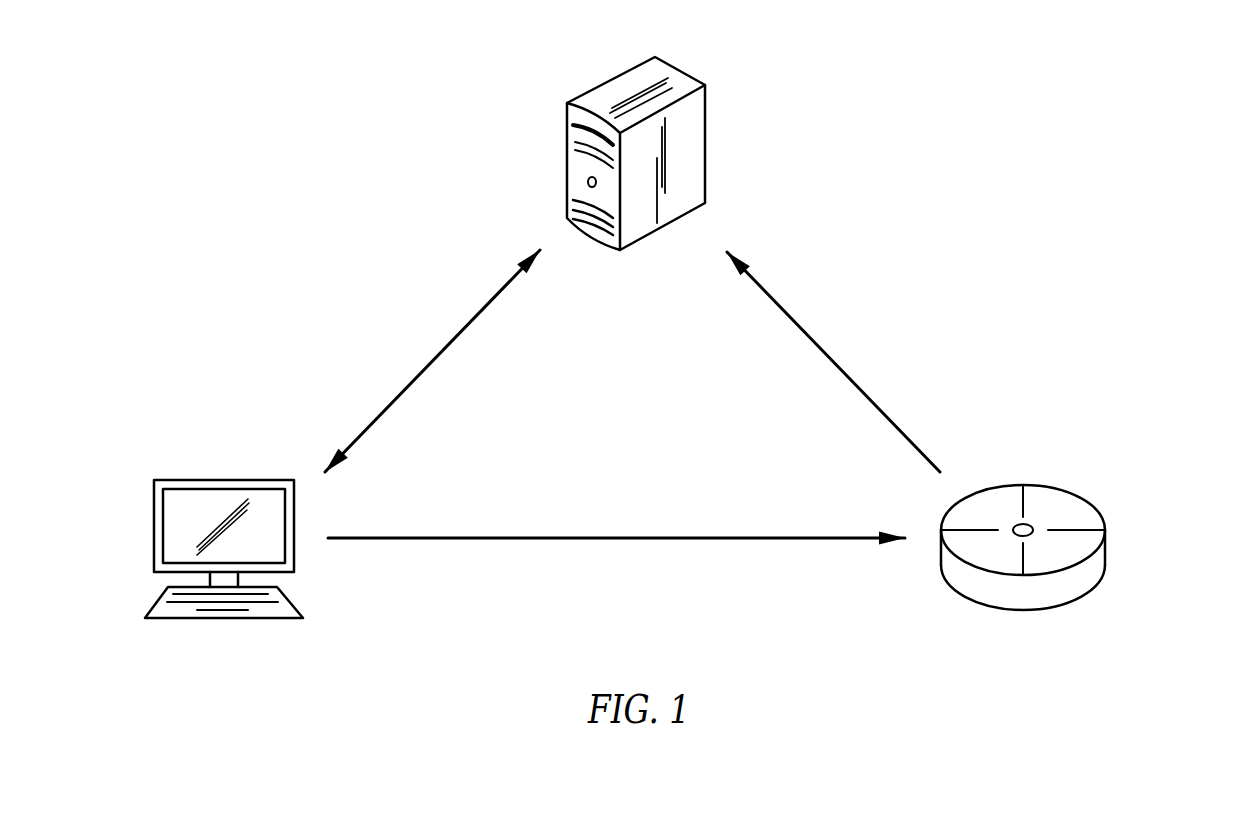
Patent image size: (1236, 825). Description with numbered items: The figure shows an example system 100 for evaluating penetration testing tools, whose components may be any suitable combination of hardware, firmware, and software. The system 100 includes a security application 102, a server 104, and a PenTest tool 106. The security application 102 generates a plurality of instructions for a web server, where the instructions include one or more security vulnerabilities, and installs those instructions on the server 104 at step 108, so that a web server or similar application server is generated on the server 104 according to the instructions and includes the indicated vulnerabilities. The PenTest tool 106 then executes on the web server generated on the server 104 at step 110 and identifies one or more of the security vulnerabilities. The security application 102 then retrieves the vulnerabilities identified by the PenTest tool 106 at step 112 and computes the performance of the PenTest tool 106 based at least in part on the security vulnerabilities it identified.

The system 100 is at (262, 132).
The security application 102 is at (1088, 503).
The server 104 is at (598, 82).
The PenTest tool 106 is at (170, 480).
The step 108 is at (843, 368).
The step 110 is at (425, 367).
The step 112 is at (662, 538).